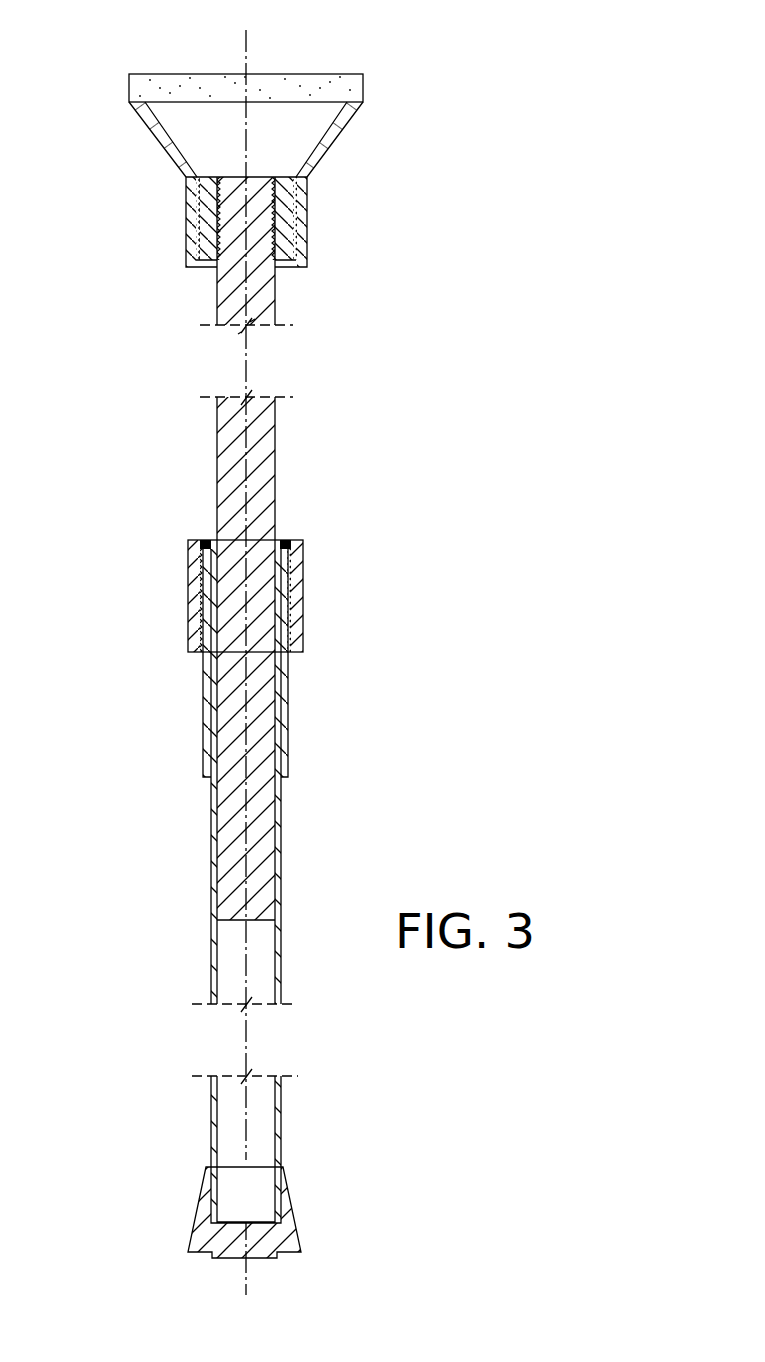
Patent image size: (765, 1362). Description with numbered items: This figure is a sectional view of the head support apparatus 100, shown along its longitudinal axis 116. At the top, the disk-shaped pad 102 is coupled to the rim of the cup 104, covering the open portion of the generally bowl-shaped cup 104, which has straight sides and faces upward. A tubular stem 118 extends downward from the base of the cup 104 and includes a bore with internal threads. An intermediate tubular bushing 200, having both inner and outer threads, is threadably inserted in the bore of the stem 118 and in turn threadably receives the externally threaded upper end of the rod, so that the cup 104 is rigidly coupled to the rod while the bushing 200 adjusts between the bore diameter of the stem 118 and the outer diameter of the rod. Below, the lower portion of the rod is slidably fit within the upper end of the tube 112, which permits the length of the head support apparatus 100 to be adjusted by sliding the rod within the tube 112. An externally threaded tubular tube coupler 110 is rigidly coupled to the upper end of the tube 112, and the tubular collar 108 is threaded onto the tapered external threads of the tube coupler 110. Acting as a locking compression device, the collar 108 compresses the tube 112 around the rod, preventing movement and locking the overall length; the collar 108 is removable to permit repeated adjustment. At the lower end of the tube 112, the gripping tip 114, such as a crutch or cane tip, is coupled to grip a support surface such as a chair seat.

The head support apparatus 100 is at (498, 412).
The pad 102 is at (363, 88).
The cup 104 is at (169, 162).
The collar 108 is at (303, 584).
The tube coupler 110 is at (287, 708).
The tube 112 is at (281, 1156).
The tip 114 is at (297, 1230).
The longitudinal axis 116 is at (252, 58).
The stem 118 is at (307, 248).
The bushing 200 is at (292, 265).